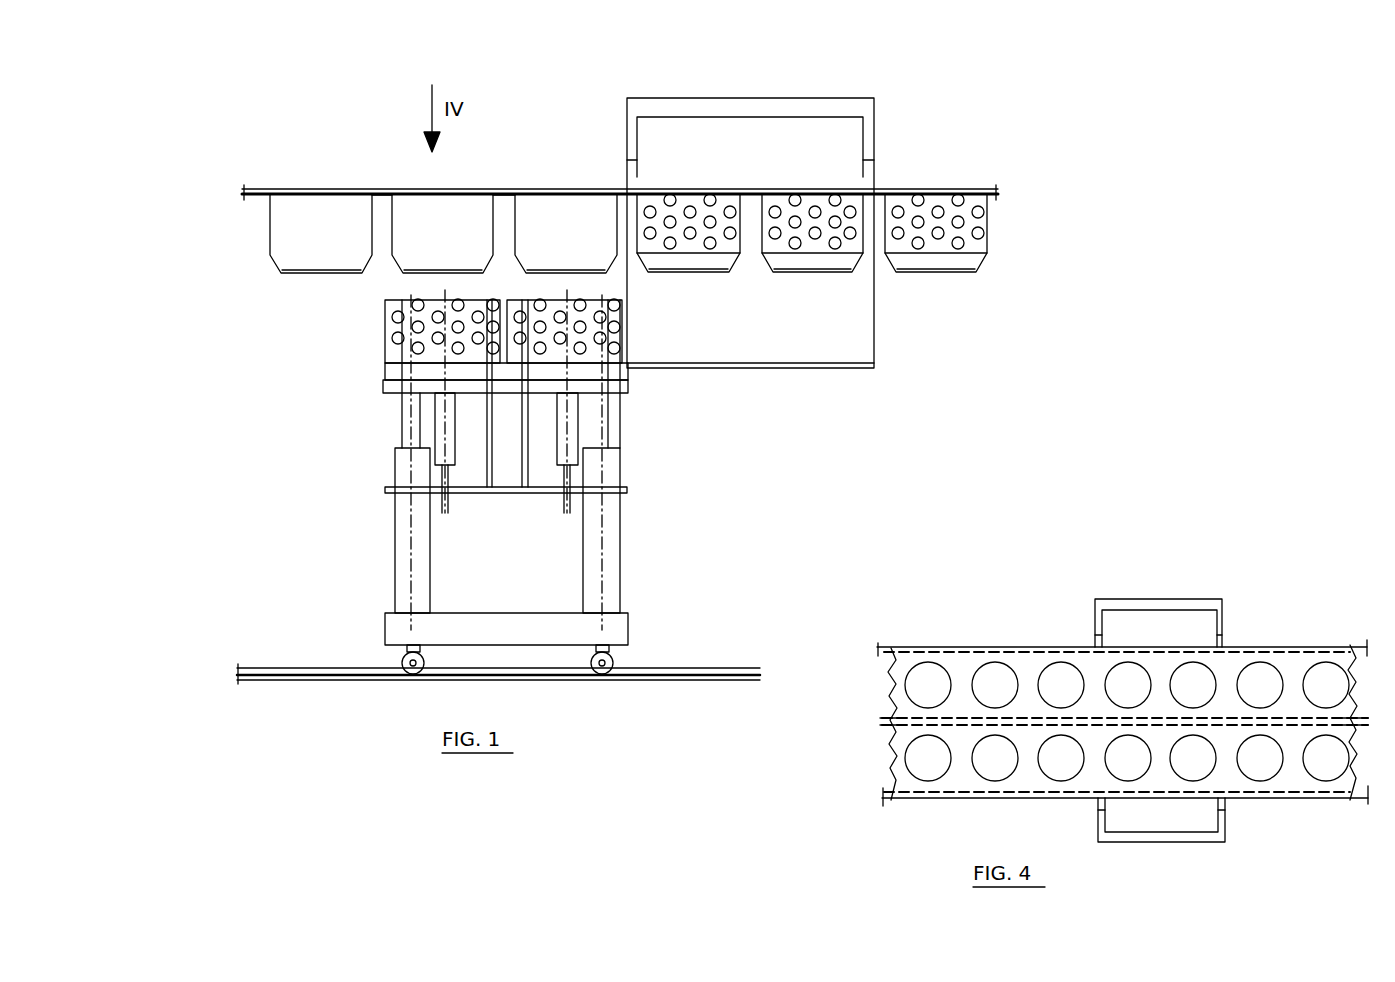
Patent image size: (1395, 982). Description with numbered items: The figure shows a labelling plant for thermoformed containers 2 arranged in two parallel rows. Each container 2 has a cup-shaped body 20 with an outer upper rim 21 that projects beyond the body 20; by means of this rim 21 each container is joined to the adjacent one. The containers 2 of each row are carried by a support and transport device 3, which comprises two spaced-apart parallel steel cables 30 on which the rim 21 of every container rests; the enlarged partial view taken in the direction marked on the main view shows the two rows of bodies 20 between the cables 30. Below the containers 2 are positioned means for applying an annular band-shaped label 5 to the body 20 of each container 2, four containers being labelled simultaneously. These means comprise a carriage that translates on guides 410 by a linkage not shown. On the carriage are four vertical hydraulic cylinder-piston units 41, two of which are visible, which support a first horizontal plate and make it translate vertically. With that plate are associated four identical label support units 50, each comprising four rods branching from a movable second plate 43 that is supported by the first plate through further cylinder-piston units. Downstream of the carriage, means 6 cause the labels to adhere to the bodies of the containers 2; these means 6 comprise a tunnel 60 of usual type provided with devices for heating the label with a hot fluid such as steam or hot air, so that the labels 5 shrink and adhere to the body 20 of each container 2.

In FIG. 1, the container 2 is at (888, 356).
In FIG. 4, the container 2 is at (837, 822).
In FIG. 1, the support and transport device 3 is at (332, 208).
In FIG. 1, the annular band-shaped label 5 is at (693, 223).
In FIG. 1, the means for causing the labels to adhere 6 is at (893, 162).
In FIG. 4, the means for causing the labels to adhere 6 is at (1178, 674).
In FIG. 1, the cup-shaped body 20 is at (450, 237).
In FIG. 4, the cup-shaped body 20 is at (1262, 766).
In FIG. 1, the outer upper rim 21 is at (378, 192).
In FIG. 4, the outer upper rim 21 is at (960, 680).
In FIG. 1, the steel cable 30 is at (243, 194).
In FIG. 4, the steel cable 30 is at (878, 647).
In FIG. 1, the vertical hydraulic cylinder-piston unit 41 is at (407, 575).
In FIG. 1, the movable second plate 43 is at (387, 497).
In FIG. 1, the label support unit 50 is at (388, 424).
In FIG. 1, the tunnel 60 is at (630, 160).
In FIG. 1, the guide 410 is at (657, 682).